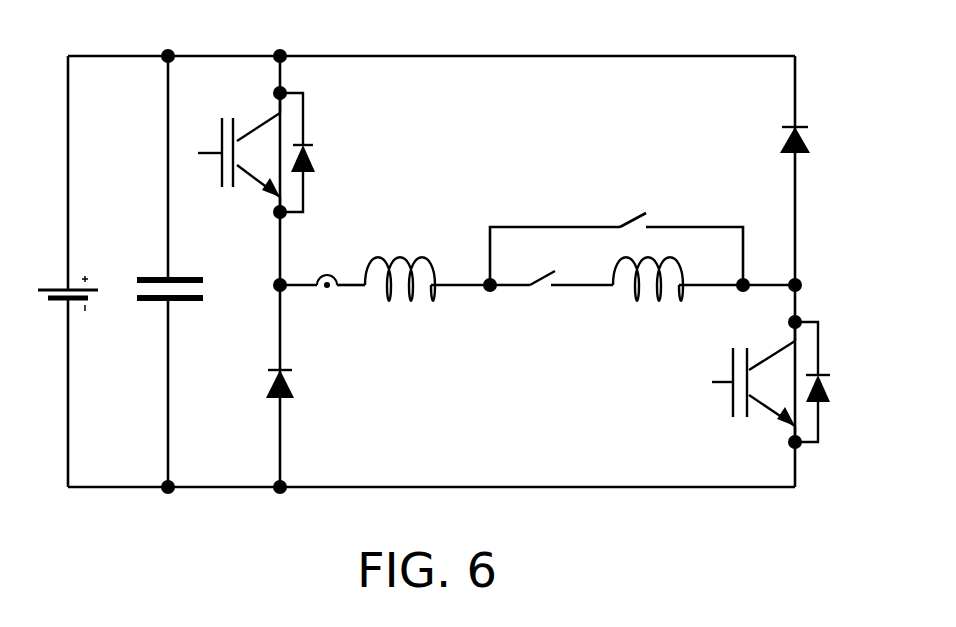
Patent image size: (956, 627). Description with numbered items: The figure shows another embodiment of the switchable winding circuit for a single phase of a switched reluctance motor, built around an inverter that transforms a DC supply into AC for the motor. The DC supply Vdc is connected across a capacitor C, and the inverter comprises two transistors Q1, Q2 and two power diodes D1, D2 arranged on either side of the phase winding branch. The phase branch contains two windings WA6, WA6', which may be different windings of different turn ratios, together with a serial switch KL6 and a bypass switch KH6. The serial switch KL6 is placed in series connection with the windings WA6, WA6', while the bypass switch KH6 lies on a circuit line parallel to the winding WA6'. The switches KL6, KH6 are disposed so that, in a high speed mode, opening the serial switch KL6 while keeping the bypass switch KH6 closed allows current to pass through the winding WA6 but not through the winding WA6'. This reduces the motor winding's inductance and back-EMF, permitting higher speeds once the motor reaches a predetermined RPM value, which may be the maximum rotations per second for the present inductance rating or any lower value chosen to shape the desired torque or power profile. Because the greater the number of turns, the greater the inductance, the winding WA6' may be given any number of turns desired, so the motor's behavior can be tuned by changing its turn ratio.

The DC supply Vdc is at (78, 259).
The capacitor C is at (170, 268).
The transistor Q1 is at (278, 152).
The transistor Q2 is at (771, 396).
The power diode D1 is at (252, 410).
The power diode D2 is at (771, 120).
The winding WA6 is at (400, 312).
The winding WA6' is at (652, 309).
The serial switch KL6 is at (544, 308).
The bypass switch KH6 is at (616, 223).